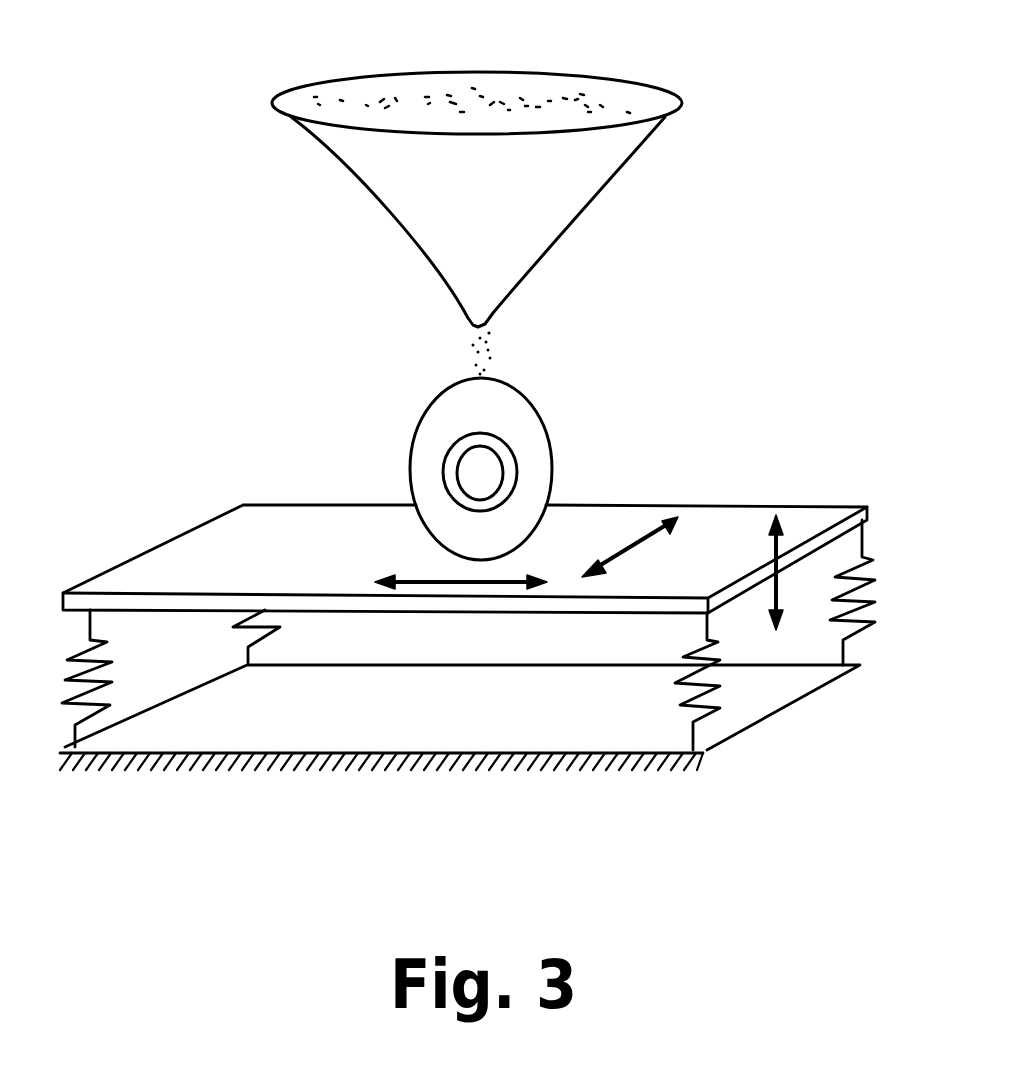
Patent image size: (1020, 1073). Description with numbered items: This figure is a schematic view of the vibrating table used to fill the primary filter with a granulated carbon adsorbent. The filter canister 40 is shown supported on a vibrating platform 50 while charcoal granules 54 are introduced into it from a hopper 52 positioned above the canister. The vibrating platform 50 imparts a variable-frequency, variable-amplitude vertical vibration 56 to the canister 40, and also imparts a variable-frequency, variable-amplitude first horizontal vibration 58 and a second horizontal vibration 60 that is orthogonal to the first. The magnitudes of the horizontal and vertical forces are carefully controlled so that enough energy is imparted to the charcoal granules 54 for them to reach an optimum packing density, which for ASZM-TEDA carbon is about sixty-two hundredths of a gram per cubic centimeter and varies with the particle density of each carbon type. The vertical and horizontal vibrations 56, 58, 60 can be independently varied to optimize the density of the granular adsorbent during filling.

The canister 40 is at (412, 487).
The vibrating platform 50 is at (202, 543).
The hopper 52 is at (420, 50).
The charcoal granules 54 is at (472, 190).
The vertical vibration 56 is at (780, 597).
The first horizontal vibration 58 is at (637, 537).
The second horizontal vibration 60 is at (453, 582).